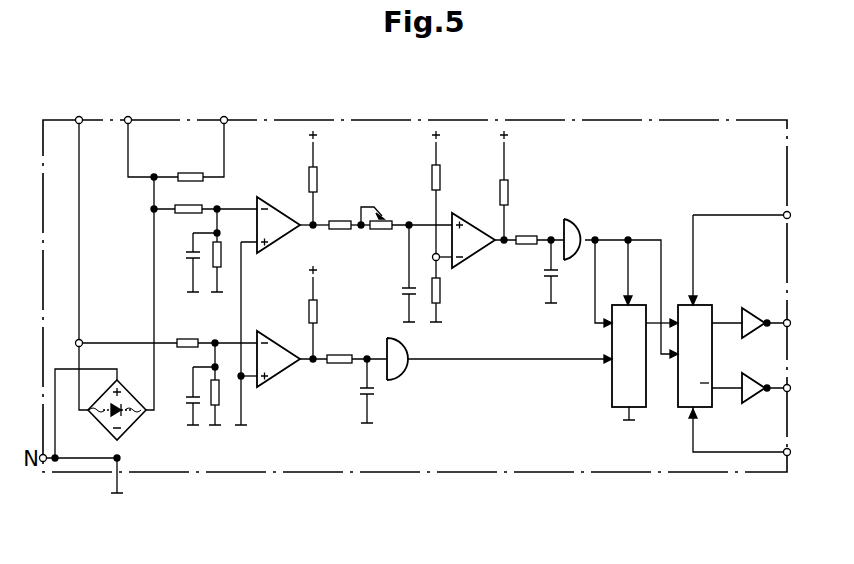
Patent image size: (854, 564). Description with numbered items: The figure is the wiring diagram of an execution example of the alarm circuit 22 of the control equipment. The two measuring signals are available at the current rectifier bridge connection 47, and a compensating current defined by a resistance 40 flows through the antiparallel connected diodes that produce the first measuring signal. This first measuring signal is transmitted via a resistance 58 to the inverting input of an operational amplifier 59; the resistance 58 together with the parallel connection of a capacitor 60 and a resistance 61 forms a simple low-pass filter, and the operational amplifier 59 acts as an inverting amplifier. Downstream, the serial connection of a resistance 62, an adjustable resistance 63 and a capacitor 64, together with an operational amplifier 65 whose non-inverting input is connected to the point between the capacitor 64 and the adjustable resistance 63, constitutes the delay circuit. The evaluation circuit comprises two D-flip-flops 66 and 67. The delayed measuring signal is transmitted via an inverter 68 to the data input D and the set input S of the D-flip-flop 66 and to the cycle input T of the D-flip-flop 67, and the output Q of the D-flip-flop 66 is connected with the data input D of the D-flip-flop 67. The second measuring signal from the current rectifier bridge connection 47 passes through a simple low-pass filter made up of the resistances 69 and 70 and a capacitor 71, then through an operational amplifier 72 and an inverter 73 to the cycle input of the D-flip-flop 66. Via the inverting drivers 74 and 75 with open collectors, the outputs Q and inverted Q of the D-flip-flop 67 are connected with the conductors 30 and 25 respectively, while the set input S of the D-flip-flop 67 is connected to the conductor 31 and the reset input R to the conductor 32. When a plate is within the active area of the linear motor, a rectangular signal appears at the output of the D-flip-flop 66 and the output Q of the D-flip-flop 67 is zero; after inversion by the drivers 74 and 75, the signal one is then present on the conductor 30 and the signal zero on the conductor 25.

The alarm circuit 22 is at (545, 118).
The resistance 40 is at (190, 174).
The resistance 58 is at (190, 204).
The operational amplifier 59 is at (280, 215).
The capacitor 60 is at (190, 253).
The resistance 61 is at (220, 256).
The resistance 62 is at (334, 216).
The adjustable resistance 63 is at (388, 217).
The capacitor 64 is at (402, 290).
The operational amplifier 65 is at (468, 226).
The inverter 68 is at (571, 240).
The conductor 31 is at (790, 215).
The conductor 30 is at (790, 323).
The conductor 25 is at (790, 388).
The conductor 32 is at (790, 452).
The inverting driver 74 is at (750, 308).
The inverting driver 75 is at (757, 402).
The D-flip-flop 67 is at (710, 369).
The D-flip-flop 66 is at (612, 377).
The inverter 73 is at (398, 356).
The operational amplifier 72 is at (277, 356).
The resistance 69 is at (188, 343).
The capacitor 71 is at (190, 397).
The resistance 70 is at (220, 396).
The current rectifier bridge connection 47 is at (133, 418).